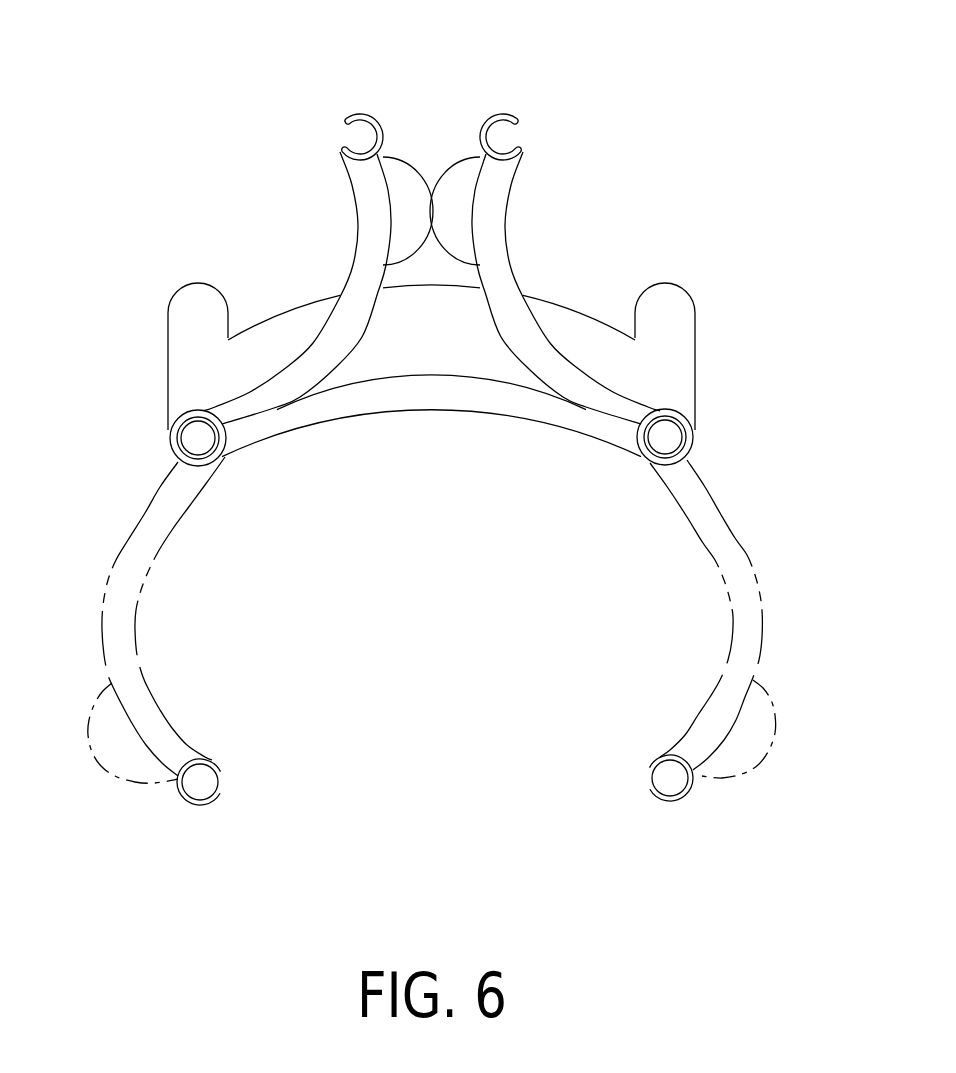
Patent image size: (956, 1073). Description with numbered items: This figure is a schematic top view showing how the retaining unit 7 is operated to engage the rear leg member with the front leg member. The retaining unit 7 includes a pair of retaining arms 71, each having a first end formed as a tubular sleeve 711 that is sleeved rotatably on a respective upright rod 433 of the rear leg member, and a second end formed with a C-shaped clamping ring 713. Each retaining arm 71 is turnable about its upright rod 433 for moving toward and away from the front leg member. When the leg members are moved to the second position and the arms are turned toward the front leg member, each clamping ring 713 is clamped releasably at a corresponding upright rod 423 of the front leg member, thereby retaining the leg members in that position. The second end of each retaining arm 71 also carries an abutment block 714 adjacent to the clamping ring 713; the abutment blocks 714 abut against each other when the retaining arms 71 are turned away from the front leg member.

The retaining unit 7 is at (510, 207).
The retaining arm 71 is at (370, 227).
The tubular sleeve 711 is at (172, 441).
The C-shaped clamping ring 713 is at (358, 113).
The abutment block 714 is at (405, 190).
The upright rod 433 is at (180, 454).
The upright rod 423 is at (220, 773).